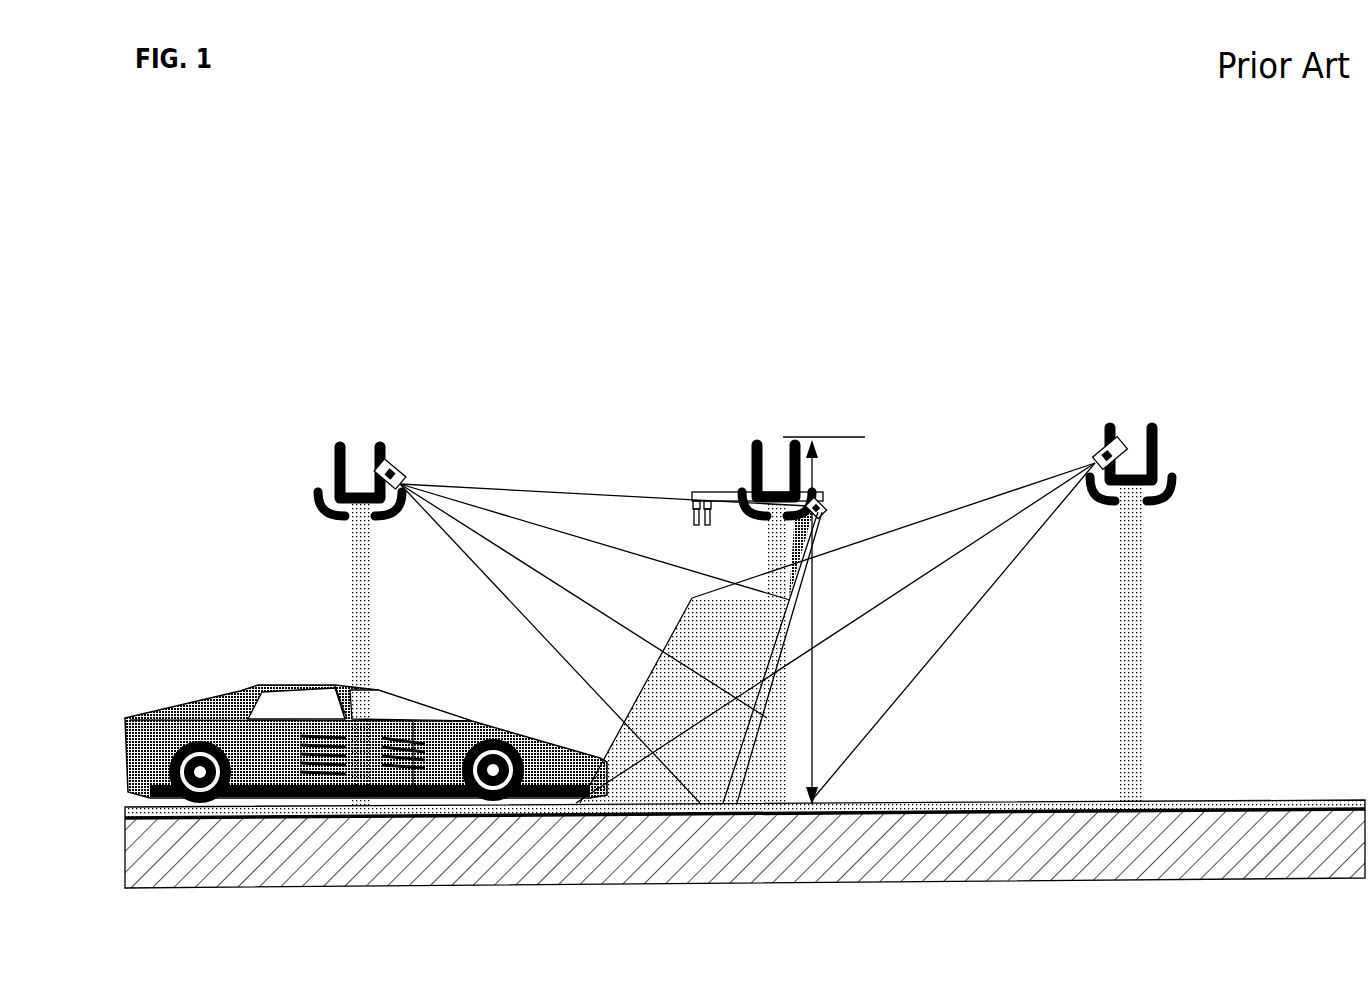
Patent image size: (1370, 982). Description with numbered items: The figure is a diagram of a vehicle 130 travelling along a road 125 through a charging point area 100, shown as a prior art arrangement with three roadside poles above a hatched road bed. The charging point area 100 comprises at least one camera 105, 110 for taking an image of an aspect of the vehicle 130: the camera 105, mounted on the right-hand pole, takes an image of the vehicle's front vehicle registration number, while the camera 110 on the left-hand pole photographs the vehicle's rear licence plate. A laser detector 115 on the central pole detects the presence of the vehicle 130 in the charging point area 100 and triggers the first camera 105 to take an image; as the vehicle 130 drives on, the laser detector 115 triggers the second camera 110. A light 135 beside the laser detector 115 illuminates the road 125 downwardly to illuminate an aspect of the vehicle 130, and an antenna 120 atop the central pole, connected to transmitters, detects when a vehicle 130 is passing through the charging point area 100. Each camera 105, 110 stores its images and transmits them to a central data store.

The charging point area 100 is at (400, 299).
The camera 105 is at (1094, 437).
The camera 110 is at (366, 433).
The laser detector 115 is at (698, 491).
The antenna 120 is at (770, 432).
The road 125 is at (1230, 799).
The vehicle 130 is at (236, 694).
The light 135 is at (838, 497).